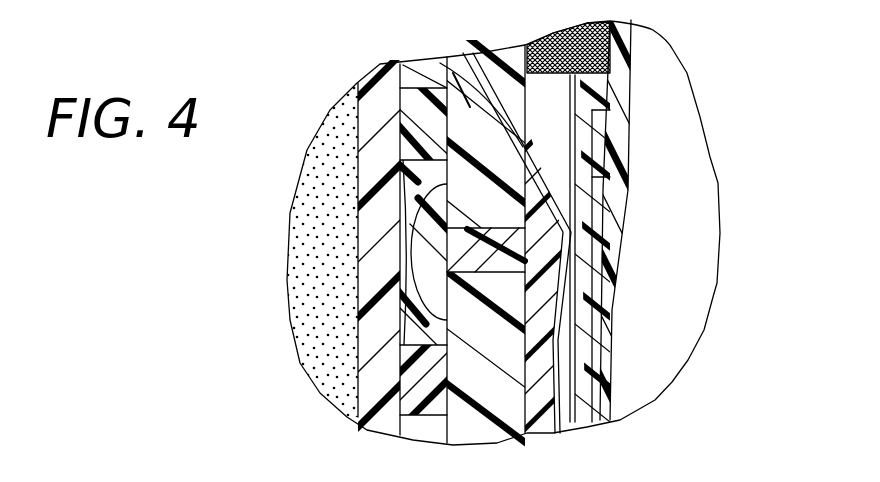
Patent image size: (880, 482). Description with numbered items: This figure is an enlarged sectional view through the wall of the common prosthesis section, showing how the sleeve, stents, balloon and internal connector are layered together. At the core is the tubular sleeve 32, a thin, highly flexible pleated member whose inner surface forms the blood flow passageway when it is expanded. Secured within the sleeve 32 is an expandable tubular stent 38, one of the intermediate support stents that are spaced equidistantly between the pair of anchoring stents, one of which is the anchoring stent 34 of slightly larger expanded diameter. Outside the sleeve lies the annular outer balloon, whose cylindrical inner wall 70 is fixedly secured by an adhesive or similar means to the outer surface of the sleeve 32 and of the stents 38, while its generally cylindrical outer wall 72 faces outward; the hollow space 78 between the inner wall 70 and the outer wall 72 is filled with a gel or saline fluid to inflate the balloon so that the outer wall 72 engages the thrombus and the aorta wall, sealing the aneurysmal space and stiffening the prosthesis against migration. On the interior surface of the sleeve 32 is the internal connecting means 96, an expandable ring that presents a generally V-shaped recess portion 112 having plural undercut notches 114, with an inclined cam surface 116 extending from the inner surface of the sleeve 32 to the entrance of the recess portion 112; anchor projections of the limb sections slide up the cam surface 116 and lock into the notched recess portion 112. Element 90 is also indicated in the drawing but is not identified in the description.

The tubular sleeve 32 is at (400, 64).
The anchoring stent 34 is at (598, 202).
The expandable tubular stent 38 is at (410, 110).
The cylindrical inner wall 70 is at (363, 183).
The cylindrical outer wall 72 is at (553, 390).
The hollow space 78 is at (307, 272).
The seal 90 is at (612, 22).
The internal connecting means 96 is at (452, 259).
The recess portion 112 is at (533, 173).
The undercut notch 114 is at (470, 58).
The inclined cam surface 116 is at (530, 117).